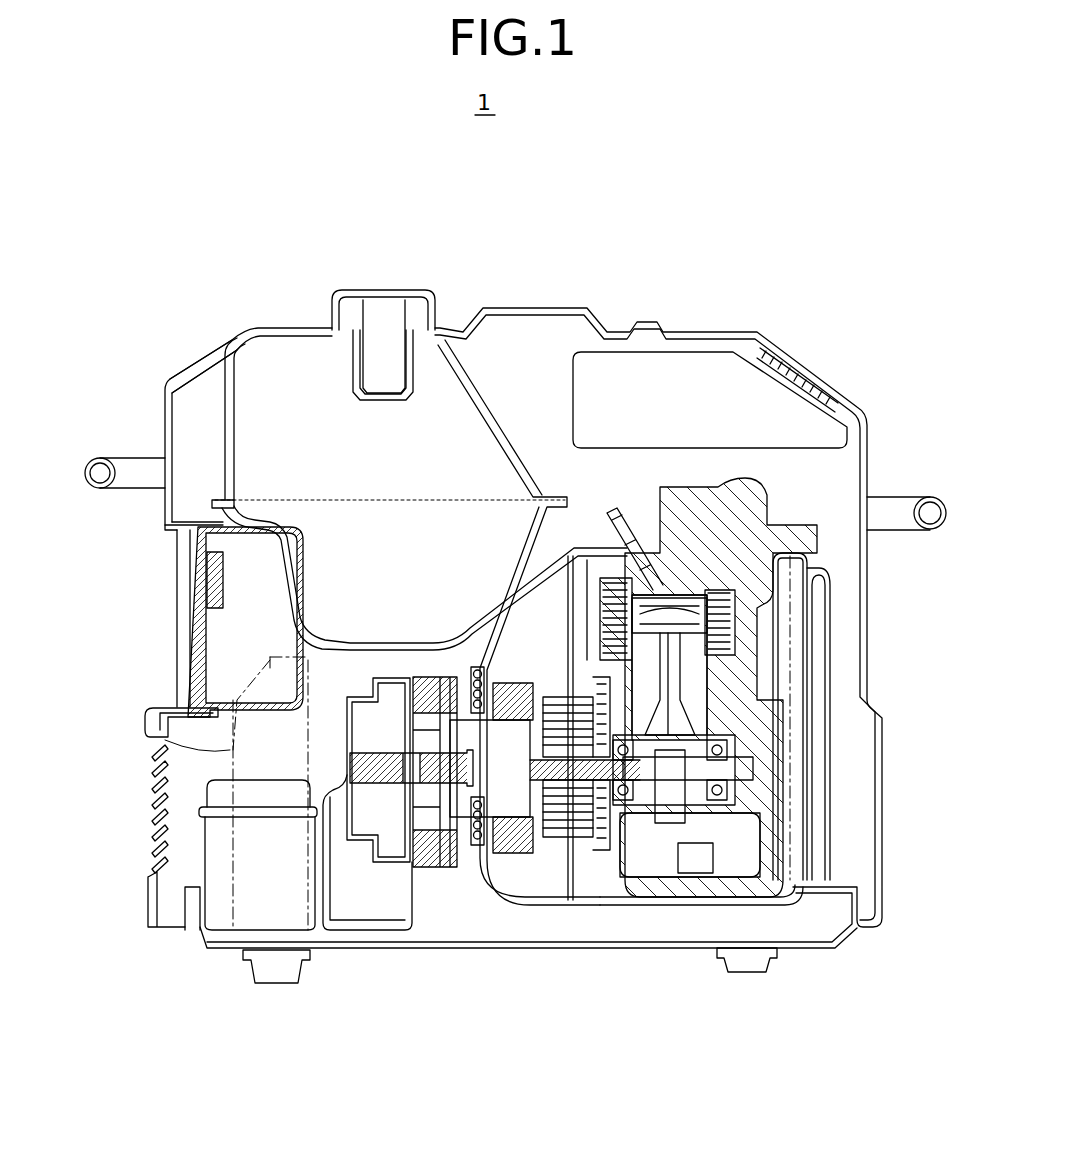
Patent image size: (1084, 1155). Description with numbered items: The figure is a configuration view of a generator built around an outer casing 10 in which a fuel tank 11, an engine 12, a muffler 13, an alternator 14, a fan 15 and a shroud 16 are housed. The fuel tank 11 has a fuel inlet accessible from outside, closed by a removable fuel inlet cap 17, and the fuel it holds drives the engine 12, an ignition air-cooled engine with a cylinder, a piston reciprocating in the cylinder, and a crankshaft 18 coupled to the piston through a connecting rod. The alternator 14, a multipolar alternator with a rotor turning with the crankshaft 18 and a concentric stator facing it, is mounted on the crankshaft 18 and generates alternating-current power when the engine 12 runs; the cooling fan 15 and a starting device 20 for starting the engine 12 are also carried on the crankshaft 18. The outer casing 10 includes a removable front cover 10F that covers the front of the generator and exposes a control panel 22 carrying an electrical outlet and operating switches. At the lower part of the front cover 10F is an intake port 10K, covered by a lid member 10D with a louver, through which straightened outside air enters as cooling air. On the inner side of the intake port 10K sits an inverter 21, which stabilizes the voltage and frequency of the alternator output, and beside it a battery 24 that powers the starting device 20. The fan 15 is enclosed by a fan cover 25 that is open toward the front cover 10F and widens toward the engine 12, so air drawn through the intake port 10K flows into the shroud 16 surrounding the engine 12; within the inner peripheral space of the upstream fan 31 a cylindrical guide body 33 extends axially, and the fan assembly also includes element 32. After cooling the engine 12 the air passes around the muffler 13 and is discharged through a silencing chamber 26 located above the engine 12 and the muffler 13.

The outer casing 10 is at (782, 362).
The front cover 10F is at (176, 382).
The lid member 10D is at (134, 785).
The intake port 10K is at (195, 875).
The fuel tank 11 is at (226, 378).
The engine 12 is at (782, 474).
The muffler 13 is at (787, 630).
The alternator 14 is at (563, 840).
The fan 15 is at (583, 1045).
The shroud 16 is at (592, 578).
The fuel inlet cap 17 is at (378, 290).
The crankshaft 18 is at (607, 845).
The starting device 20 is at (388, 863).
The inverter 21 is at (152, 715).
The control panel 22 is at (203, 587).
The battery 24 is at (223, 907).
The fan cover 25 is at (505, 560).
The silencing chamber 26 is at (715, 383).
The upstream fan 31 is at (517, 850).
The stator 32 is at (613, 853).
The cylindrical guide body 33 is at (468, 815).